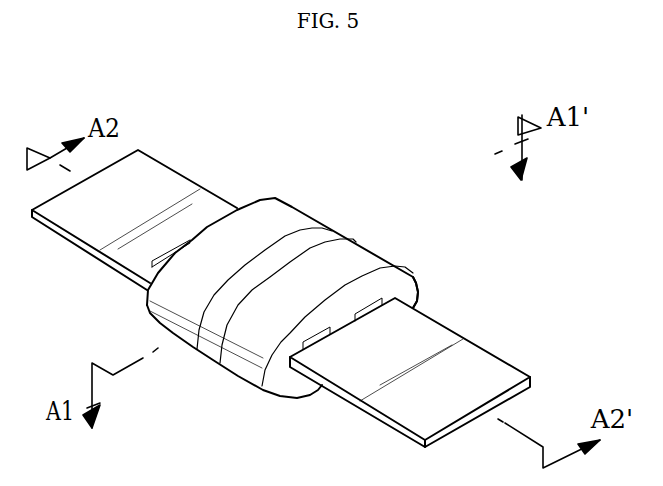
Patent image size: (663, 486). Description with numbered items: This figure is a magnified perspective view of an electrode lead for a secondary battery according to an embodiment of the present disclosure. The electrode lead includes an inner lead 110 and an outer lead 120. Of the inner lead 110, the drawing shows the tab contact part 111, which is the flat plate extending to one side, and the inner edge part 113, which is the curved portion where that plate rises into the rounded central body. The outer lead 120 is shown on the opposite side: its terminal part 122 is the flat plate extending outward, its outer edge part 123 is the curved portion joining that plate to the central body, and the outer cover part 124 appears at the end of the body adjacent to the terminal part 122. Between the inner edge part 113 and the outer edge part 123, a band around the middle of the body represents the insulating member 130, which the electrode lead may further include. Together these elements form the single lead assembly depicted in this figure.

The inner lead 110 is at (243, 135).
The tab contact part 111 is at (218, 197).
The inner edge part 113 is at (288, 206).
The insulating member 130 is at (333, 232).
The outer lead 120 is at (490, 218).
The terminal part 122 is at (479, 357).
The outer edge part 123 is at (386, 263).
The outer cover part 124 is at (410, 293).